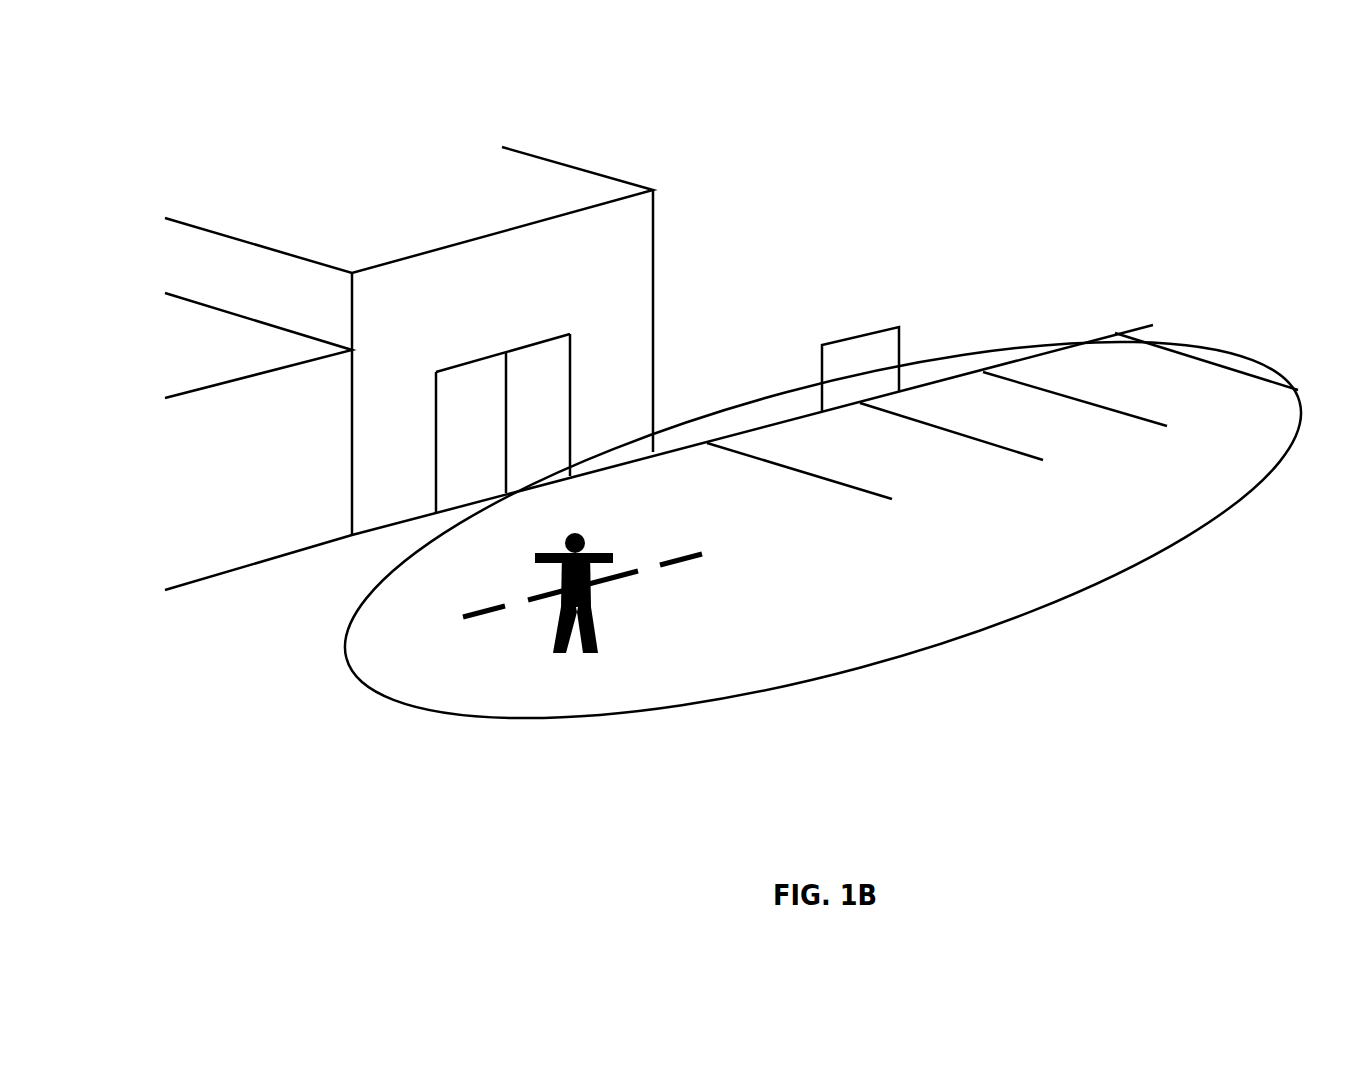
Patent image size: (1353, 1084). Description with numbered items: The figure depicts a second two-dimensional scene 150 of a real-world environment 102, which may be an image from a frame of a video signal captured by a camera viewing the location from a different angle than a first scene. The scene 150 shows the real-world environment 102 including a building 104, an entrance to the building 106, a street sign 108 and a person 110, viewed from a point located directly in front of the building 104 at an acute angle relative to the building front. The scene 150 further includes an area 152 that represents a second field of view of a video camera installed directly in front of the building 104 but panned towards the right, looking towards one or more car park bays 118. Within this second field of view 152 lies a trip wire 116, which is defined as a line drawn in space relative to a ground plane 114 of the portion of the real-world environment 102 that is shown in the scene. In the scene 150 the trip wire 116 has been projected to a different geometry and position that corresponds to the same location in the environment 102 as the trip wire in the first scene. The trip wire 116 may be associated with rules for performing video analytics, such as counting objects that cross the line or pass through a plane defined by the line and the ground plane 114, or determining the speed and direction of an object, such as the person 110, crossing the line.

The two-dimensional scene 150 is at (279, 143).
The real-world environment 102 is at (847, 198).
The building 104 is at (628, 196).
The entrance to the building 106 is at (571, 366).
The street sign 108 is at (872, 323).
The person 110 is at (580, 533).
The ground plane 114 is at (747, 657).
The trip wire 116 is at (687, 562).
The car park bays 118 is at (1165, 365).
The area representing second field of view 152 is at (1128, 568).